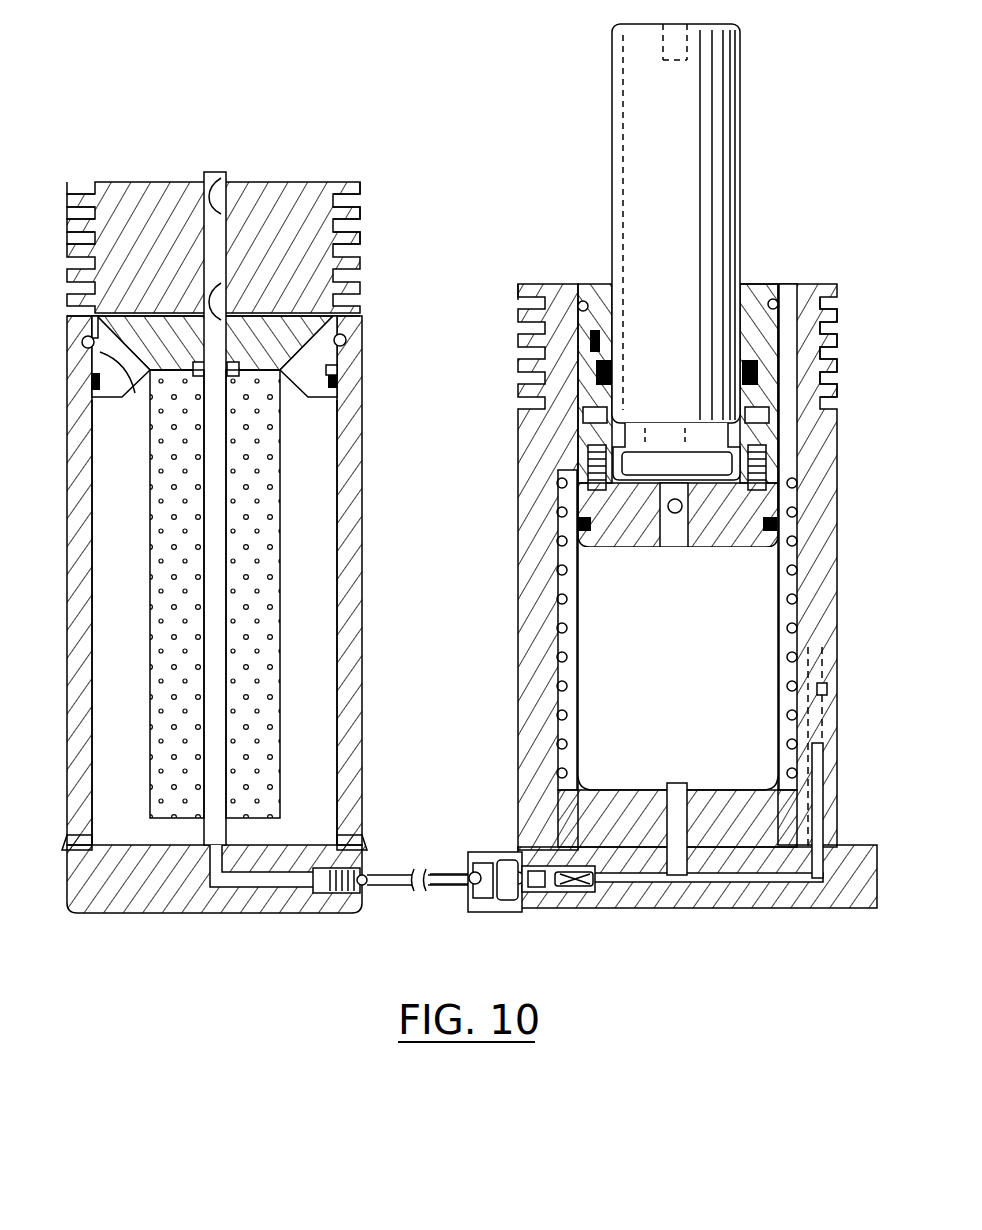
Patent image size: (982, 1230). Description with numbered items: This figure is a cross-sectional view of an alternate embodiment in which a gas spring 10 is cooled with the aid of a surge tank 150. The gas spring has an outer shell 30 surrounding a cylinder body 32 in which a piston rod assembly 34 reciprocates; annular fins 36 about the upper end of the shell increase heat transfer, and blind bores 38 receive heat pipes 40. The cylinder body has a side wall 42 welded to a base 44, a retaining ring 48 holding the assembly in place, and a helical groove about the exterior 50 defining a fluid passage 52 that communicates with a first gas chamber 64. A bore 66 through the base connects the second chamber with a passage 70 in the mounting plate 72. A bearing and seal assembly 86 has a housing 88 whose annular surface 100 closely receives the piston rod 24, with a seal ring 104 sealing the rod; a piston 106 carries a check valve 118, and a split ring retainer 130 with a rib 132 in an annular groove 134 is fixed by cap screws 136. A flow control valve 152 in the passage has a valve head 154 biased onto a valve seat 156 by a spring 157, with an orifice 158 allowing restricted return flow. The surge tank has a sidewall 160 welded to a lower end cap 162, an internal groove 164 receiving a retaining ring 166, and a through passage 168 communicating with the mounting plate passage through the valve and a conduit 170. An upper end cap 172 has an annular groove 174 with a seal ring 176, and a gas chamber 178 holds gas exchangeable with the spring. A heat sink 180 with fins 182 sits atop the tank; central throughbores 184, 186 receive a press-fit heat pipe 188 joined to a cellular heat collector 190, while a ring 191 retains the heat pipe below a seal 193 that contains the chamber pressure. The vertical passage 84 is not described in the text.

The gas spring 10 is at (532, 188).
The piston rod 24 is at (730, 90).
The shell 30 is at (810, 503).
The cylinder body 32 is at (835, 470).
The piston rod assembly 34 is at (577, 555).
The annular fins 36 is at (835, 300).
The blind bores 38 is at (835, 680).
The heat pipe 40 is at (835, 660).
The side wall 42 is at (780, 568).
The base 44 is at (725, 790).
The retaining ring 48 is at (770, 295).
The exterior 50 is at (795, 535).
The fluid passage 52 is at (780, 560).
The first gas chamber 64 is at (765, 395).
The bore 66 is at (678, 790).
The passage 70 is at (690, 895).
The mounting plate 72 is at (760, 895).
The vertical passage 84 is at (820, 795).
The bearing and seal assembly 86 is at (757, 275).
The housing 88 is at (580, 375).
The annular surface 100 is at (615, 365).
The seal ring 104 is at (612, 380).
The piston 106 is at (700, 548).
The valve 118 is at (655, 518).
The split ring retainer 130 is at (580, 430).
The rib 132 is at (605, 398).
The annular groove 134 is at (645, 422).
The cap screws 136 is at (760, 430).
The surge tank 150 is at (358, 168).
The flow control valve 152 is at (512, 904).
The valve head 154 is at (560, 892).
The valve seat 156 is at (600, 890).
The spring 157 is at (550, 890).
The orifice 158 is at (570, 862).
The sidewall 160 is at (85, 572).
The lower end cap 162 is at (120, 905).
The internal groove 164 is at (175, 378).
The retaining ring 166 is at (88, 342).
The through passage 168 is at (255, 890).
The conduit 170 is at (395, 865).
The upper end cap 172 is at (312, 327).
The annular groove 174 is at (337, 372).
The seal ring 176 is at (337, 385).
The gas chamber 178 is at (320, 455).
The heat sink 180 is at (130, 195).
The fins 182 is at (105, 215).
The central throughbore 184 is at (215, 185).
The central throughbore 186 is at (222, 290).
The heat pipe 188 is at (220, 572).
The heat collector 190 is at (275, 645).
The ring 191 is at (117, 622).
The seal 193 is at (200, 370).